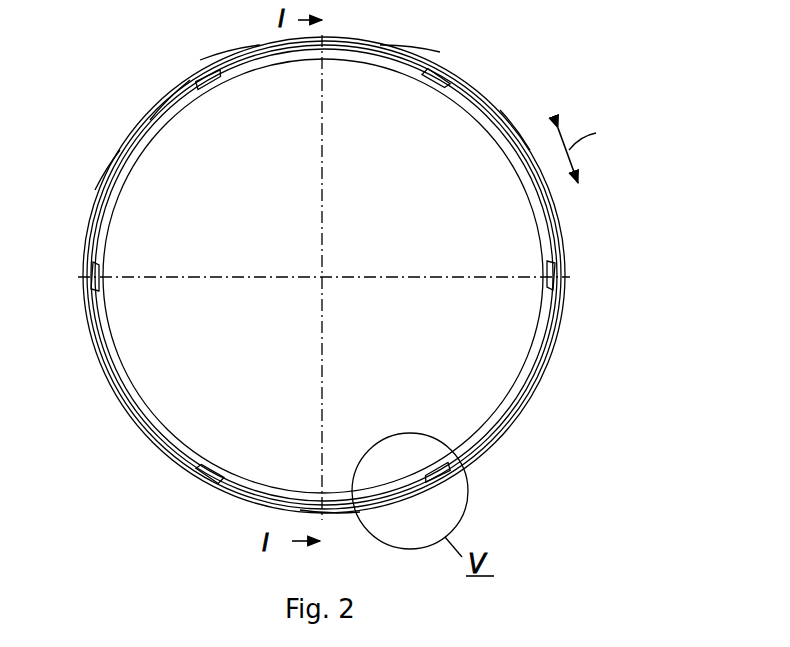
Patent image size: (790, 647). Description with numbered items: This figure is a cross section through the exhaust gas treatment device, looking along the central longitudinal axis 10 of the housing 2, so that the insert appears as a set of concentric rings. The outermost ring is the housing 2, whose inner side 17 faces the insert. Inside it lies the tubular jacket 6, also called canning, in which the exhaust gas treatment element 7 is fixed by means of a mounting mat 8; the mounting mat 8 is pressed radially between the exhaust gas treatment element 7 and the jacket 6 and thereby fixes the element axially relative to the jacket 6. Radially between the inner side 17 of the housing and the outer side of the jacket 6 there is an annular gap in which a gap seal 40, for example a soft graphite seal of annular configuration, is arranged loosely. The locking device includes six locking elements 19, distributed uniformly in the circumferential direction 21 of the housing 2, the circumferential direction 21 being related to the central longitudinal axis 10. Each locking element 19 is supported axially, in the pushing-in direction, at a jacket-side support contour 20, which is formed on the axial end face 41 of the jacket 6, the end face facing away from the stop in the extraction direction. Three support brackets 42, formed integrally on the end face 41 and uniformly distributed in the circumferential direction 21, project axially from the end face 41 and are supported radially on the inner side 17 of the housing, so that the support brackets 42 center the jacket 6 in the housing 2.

The housing 2 is at (233, 497).
The jacket 6 is at (248, 492).
The exhaust gas treatment element 7 is at (488, 387).
The mounting mat 8 is at (532, 368).
The central longitudinal axis 10 is at (323, 276).
The inner side of the housing 17 is at (122, 405).
The locking element 19 is at (212, 90).
The support contour 20 is at (402, 60).
The circumferential direction 21 is at (594, 151).
The gap seal 40 is at (201, 30).
The axial end face 41 is at (160, 133).
The support bracket 42 is at (107, 178).